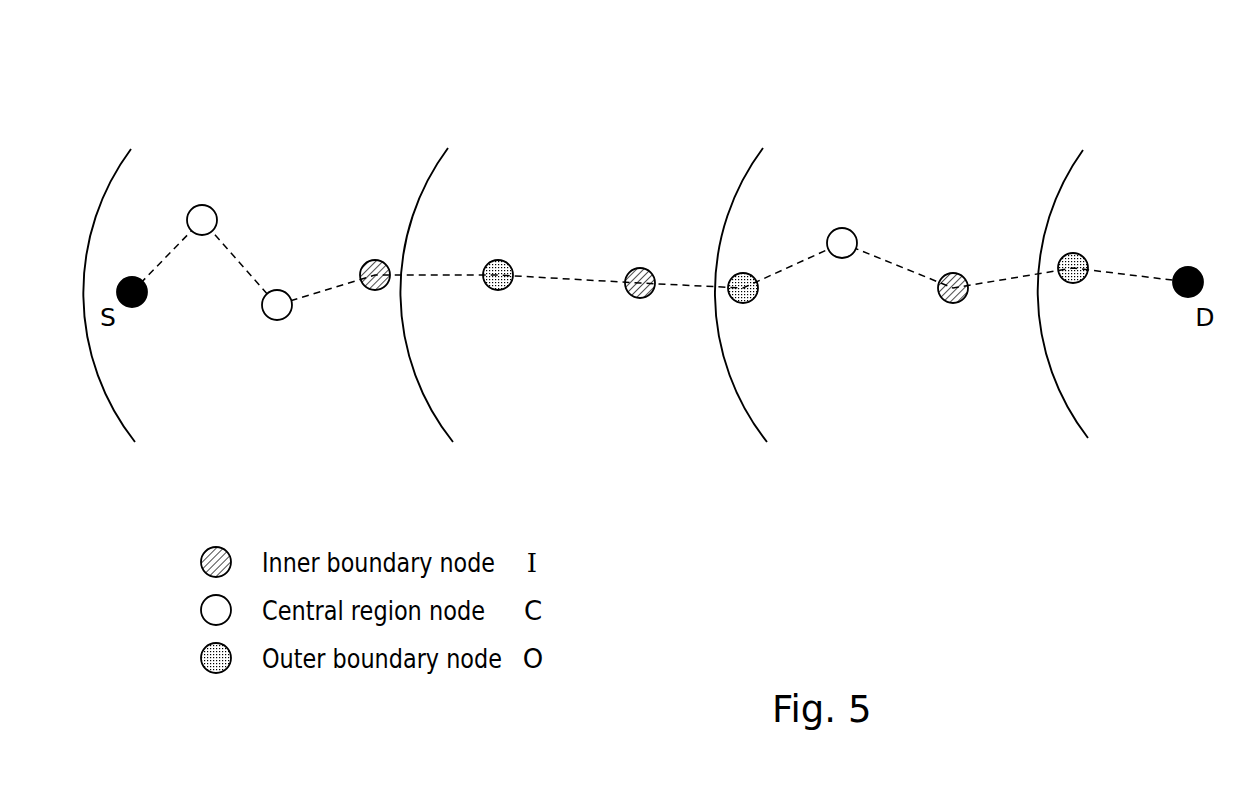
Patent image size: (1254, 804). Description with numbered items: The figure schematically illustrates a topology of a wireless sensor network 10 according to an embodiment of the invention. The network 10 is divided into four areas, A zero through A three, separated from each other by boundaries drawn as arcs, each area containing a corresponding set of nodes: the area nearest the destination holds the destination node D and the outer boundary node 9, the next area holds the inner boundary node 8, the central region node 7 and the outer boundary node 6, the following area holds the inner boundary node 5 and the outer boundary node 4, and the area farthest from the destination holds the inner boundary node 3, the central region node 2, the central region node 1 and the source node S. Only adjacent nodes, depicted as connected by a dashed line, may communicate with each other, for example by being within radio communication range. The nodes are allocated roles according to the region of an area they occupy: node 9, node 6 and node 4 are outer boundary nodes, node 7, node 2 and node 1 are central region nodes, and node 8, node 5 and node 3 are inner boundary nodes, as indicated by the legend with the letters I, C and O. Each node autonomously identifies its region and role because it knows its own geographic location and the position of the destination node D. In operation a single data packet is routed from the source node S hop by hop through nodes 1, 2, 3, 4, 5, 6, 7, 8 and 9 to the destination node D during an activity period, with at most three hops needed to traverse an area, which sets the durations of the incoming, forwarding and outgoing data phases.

The central region node s1 1 is at (215, 228).
The central region node s2 2 is at (287, 316).
The inner boundary node s3 3 is at (378, 291).
The outer boundary node s4 4 is at (507, 289).
The inner boundary node s5 5 is at (650, 297).
The outer boundary node s6 6 is at (749, 301).
The central region node s7 7 is at (849, 255).
The inner boundary node s8 8 is at (960, 301).
The outer boundary node s9 9 is at (1080, 280).
The wireless sensor network 10 is at (873, 152).